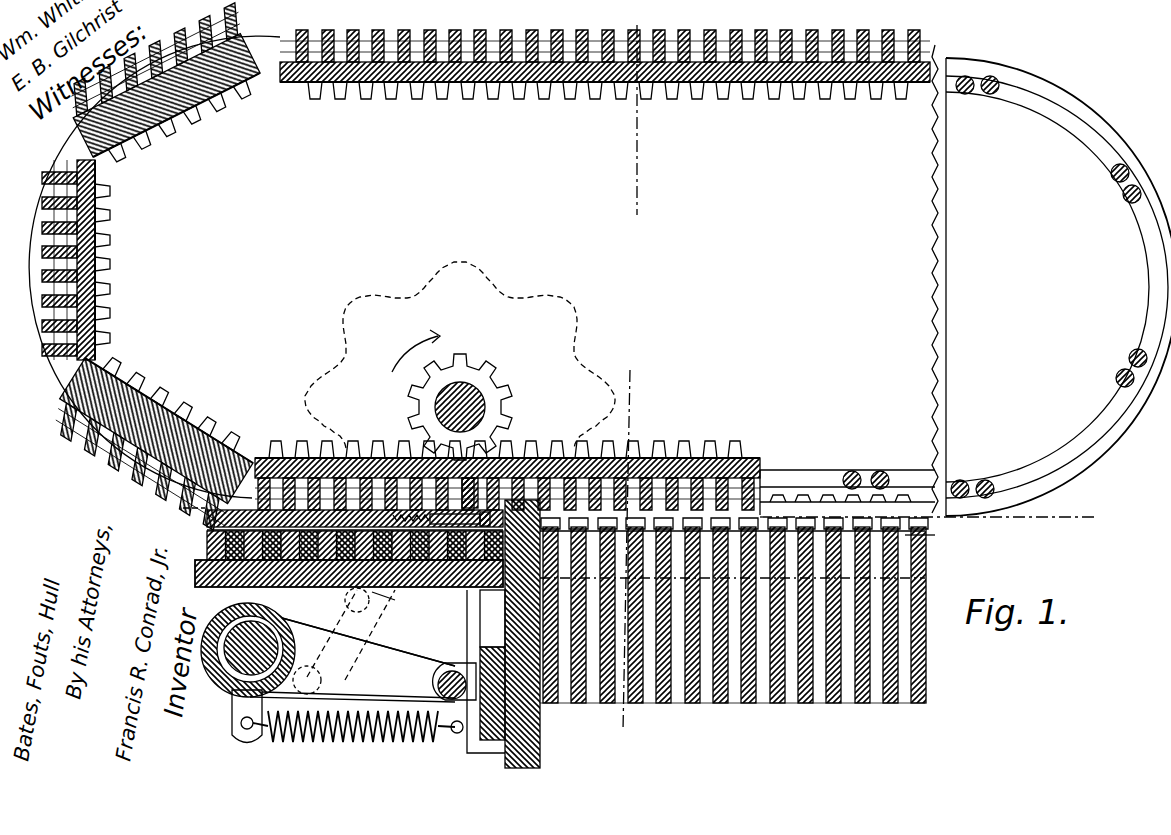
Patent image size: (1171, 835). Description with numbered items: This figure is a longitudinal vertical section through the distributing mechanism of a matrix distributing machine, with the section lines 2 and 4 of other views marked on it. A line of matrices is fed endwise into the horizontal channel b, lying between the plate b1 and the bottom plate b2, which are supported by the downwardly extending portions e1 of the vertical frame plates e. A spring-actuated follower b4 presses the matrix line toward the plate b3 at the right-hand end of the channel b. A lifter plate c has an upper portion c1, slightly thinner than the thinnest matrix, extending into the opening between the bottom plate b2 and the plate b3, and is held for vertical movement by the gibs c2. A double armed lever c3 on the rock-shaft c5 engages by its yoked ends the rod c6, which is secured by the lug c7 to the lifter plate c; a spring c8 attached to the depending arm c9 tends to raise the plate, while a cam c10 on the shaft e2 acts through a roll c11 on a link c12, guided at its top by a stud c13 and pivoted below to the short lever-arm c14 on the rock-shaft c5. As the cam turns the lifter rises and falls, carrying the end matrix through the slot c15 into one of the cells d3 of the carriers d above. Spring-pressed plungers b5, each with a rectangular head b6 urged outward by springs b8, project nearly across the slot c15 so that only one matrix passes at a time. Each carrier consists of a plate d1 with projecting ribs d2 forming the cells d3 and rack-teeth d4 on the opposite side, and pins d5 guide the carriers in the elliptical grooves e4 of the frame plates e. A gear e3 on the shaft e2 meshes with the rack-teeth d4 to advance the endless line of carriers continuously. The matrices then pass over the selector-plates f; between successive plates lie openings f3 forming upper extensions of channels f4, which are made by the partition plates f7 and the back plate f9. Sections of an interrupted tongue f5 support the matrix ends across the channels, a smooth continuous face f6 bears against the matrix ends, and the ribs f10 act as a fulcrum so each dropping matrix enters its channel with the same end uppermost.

The carriers d is at (597, 86).
The carrier plate d1 is at (762, 470).
The projecting ribs d2 is at (185, 435).
The cells d3 is at (535, 55).
The rack-teeth d4 is at (690, 462).
The pins d5 is at (496, 86).
The vertical frame plates e is at (600, 276).
The downwardly extending portions of the frame plates e1 is at (368, 642).
The shaft e2 is at (460, 399).
The gear e3 is at (508, 388).
The grooves e4 is at (1085, 135).
The horizontal channel b is at (292, 580).
The plate b1 is at (345, 518).
The bottom plate b2 is at (222, 587).
The plate b3 is at (540, 730).
The spring-actuated follower b4 is at (345, 545).
The plungers b5 is at (455, 506).
The rectangular head b6 is at (482, 507).
The springs b8 is at (414, 505).
The lifter plate c is at (510, 639).
The upper portion of lifter plate c1 is at (492, 618).
The gibs c2 is at (477, 671).
The double armed lever c3 is at (352, 660).
The rock-shaft c5 is at (280, 630).
The rod c6 is at (455, 668).
The lug c7 is at (458, 685).
The spring c8 is at (358, 737).
The depending arm c9 is at (247, 716).
The cam c10 is at (606, 403).
The roll c11 is at (393, 598).
The link c12 is at (345, 613).
The stud c13 is at (352, 635).
The short lever-arm c14 is at (312, 672).
The slot c15 is at (500, 472).
The selector-plates f is at (732, 610).
The opening f3 is at (826, 456).
The channels f4 is at (763, 690).
The interrupted tongue f5 is at (883, 495).
The smooth continuous face f6 is at (848, 478).
The partition plates f7 is at (826, 690).
The back plate f9 is at (920, 615).
The ribs f10 is at (933, 540).
The section line 2— 2 is at (631, 379).
The section line 4— 4 is at (637, 513).